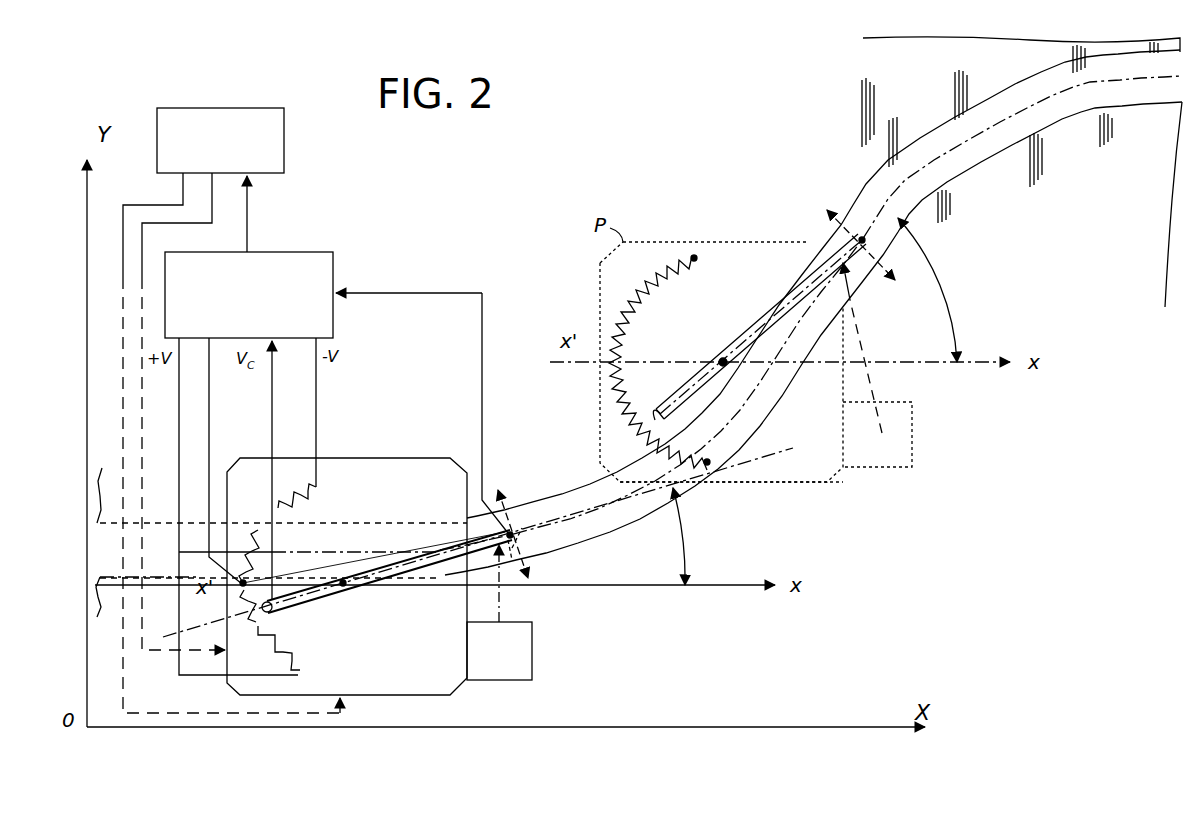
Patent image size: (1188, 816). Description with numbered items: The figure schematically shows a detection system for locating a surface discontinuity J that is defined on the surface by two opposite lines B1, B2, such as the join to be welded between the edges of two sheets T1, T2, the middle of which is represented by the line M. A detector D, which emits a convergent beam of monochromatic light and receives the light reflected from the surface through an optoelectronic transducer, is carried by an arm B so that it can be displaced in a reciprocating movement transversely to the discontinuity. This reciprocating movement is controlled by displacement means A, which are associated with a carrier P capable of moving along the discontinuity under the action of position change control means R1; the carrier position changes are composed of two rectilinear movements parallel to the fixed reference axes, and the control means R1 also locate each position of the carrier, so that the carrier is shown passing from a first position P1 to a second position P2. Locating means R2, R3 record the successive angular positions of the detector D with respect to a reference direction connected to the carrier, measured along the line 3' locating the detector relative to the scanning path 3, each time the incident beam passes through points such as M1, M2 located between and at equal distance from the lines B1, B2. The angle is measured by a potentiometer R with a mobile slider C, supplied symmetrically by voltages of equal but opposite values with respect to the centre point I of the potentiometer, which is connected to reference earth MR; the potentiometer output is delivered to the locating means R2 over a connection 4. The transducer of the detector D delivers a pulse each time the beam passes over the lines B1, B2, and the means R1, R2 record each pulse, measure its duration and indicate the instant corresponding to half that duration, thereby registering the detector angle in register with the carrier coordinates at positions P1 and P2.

The curved guide path 3 is at (811, 312).
The pivot axis 3' is at (468, 546).
The feedback connection 4 is at (482, 415).
The position change control means R1 is at (214, 156).
The locating means R2 is at (246, 308).
The carrier P is at (400, 455).
The first carrier position P1 is at (343, 580).
The second carrier position P2 is at (723, 360).
The arm B is at (412, 572).
The mobile slider C is at (258, 604).
The potentiometer R is at (300, 670).
The locating means R3 is at (343, 586).
The centre point of the potentiometer I is at (243, 583).
The displacement means A is at (499, 612).
The first point on the discontinuity M1 is at (530, 520).
The second point on the discontinuity M2 is at (856, 235).
The detector D is at (535, 550).
The reference earth MR is at (212, 348).
The first sheet T1 is at (882, 68).
The second sheet T2 is at (1148, 219).
The first line defining the discontinuity B1 is at (1008, 100).
The second line defining the discontinuity B2 is at (958, 178).
The discontinuity J is at (1065, 135).
The line representing the discontinuity M is at (1132, 82).